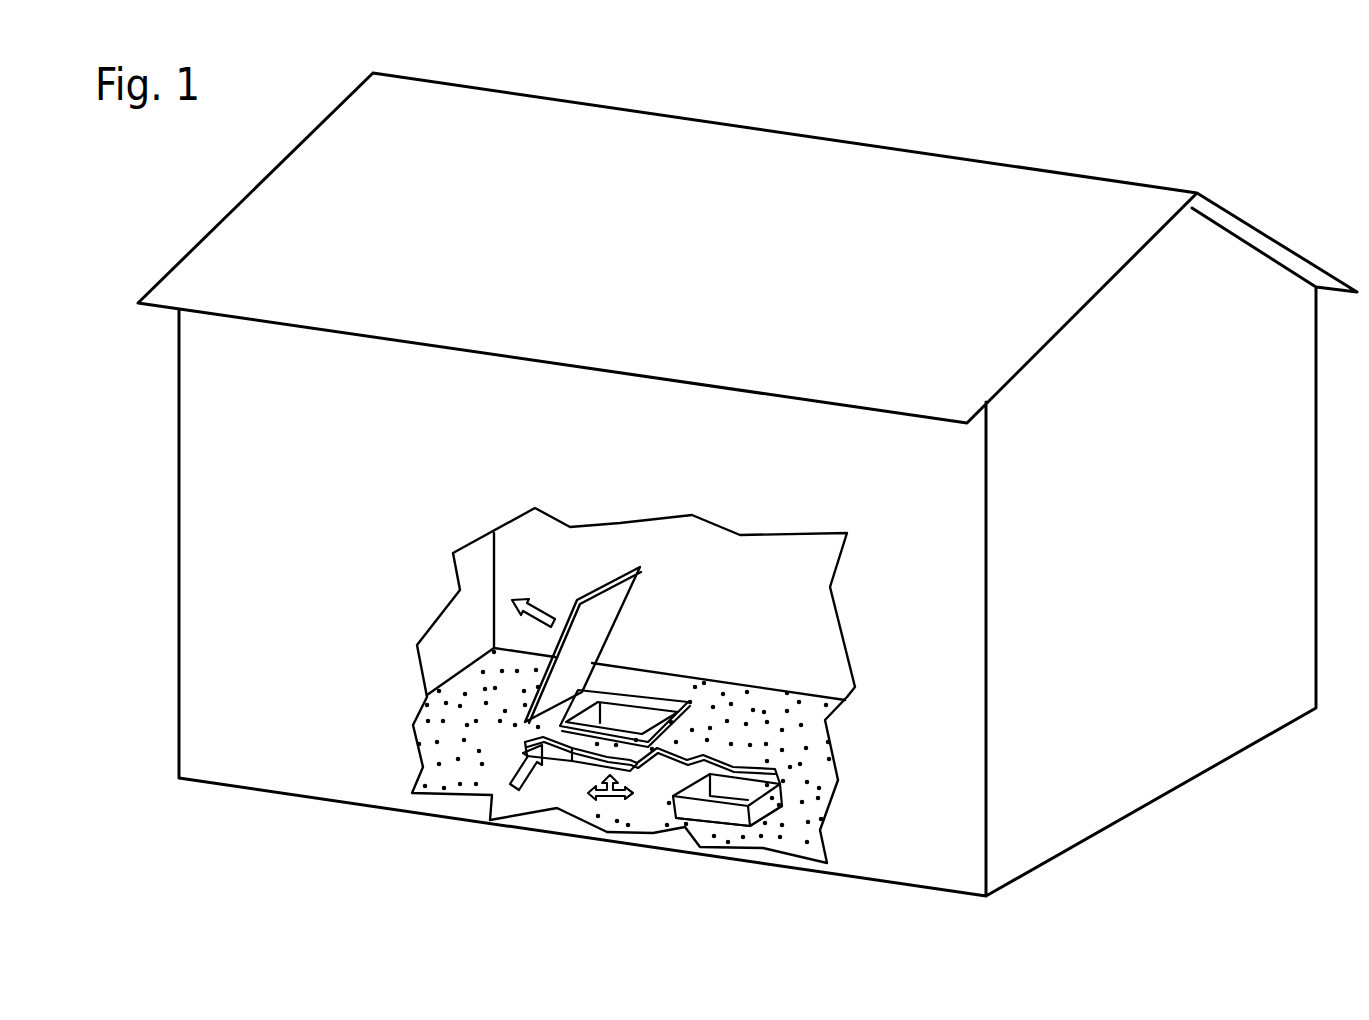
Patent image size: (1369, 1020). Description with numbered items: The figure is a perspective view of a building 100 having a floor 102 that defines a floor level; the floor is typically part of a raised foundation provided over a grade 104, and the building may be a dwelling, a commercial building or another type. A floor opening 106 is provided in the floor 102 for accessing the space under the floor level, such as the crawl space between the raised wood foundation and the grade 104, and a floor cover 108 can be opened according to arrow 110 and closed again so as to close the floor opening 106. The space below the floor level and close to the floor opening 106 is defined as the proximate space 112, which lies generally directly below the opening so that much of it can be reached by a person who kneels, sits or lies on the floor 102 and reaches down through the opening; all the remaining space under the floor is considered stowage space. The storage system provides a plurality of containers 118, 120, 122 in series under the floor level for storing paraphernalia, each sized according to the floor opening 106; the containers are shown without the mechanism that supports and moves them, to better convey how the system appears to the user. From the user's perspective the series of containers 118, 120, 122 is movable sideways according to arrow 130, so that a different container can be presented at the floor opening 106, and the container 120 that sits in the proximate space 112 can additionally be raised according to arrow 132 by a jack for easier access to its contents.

The building 100 is at (252, 240).
The floor 102 is at (730, 700).
The grade 104 is at (690, 777).
The floor opening 106 is at (688, 702).
The floor cover 108 is at (637, 590).
The arrow 110 is at (535, 606).
The proximate space 112 is at (548, 788).
The container 118 is at (523, 768).
The container 120 is at (600, 703).
The container 122 is at (727, 810).
The arrow 130 is at (600, 797).
The arrow 132 is at (630, 797).